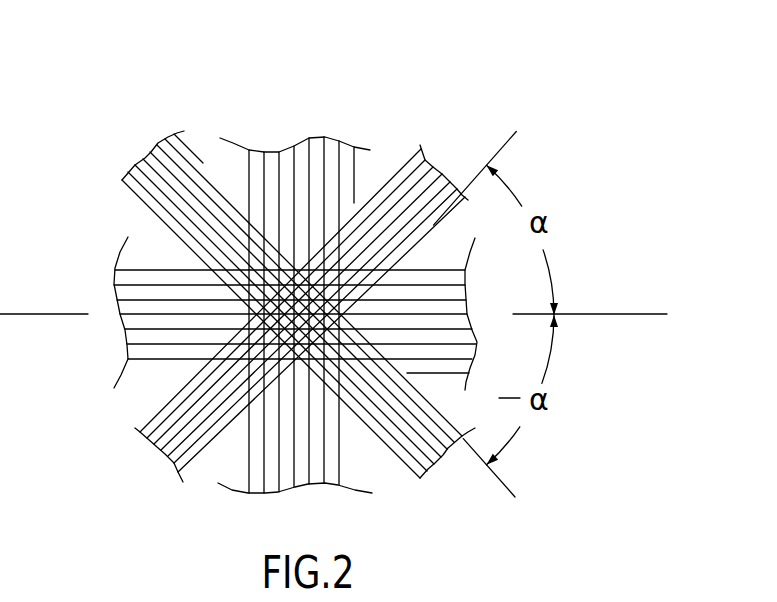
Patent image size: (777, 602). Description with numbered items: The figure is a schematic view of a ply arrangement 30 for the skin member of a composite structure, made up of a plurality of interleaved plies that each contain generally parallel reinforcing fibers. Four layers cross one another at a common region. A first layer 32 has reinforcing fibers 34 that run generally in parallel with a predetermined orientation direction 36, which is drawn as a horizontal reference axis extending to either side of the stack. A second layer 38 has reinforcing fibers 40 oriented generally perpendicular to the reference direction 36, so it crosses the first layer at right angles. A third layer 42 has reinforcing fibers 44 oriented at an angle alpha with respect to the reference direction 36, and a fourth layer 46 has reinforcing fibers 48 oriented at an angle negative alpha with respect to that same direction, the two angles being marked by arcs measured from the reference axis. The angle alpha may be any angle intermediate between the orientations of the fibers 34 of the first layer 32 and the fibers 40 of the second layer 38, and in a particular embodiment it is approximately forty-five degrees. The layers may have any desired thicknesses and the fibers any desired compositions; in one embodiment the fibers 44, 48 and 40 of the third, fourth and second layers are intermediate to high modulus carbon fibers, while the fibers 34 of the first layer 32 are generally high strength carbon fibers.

The ply arrangement 30 is at (531, 52).
The first layer 32 is at (113, 278).
The reinforcing fibers 34 is at (162, 268).
The predetermined orientation direction 36 is at (615, 314).
The second layer 38 is at (255, 148).
The reinforcing fibers 40 is at (284, 173).
The third layer 42 is at (135, 428).
The reinforcing fibers 44 is at (187, 459).
The fourth layer 46 is at (156, 146).
The reinforcing fibers 48 is at (196, 140).